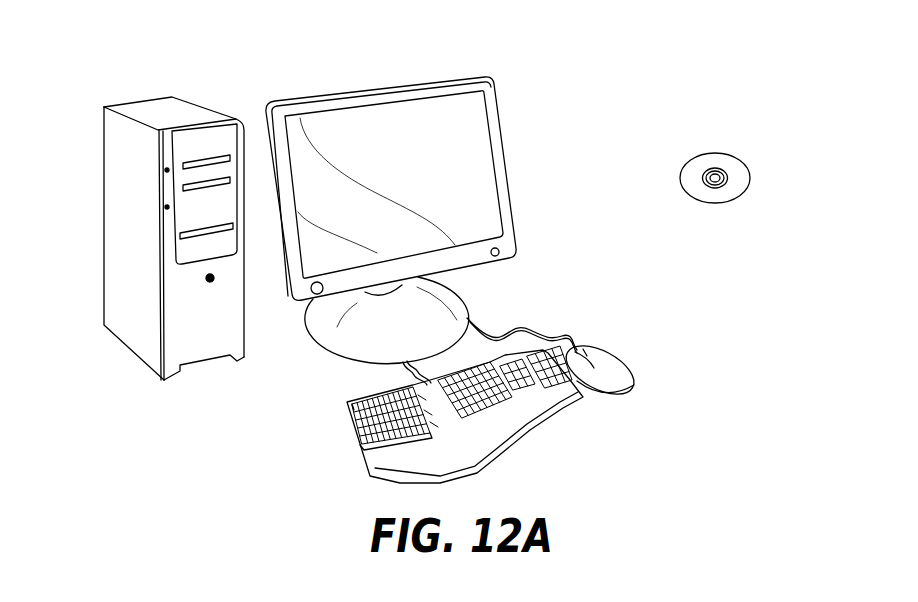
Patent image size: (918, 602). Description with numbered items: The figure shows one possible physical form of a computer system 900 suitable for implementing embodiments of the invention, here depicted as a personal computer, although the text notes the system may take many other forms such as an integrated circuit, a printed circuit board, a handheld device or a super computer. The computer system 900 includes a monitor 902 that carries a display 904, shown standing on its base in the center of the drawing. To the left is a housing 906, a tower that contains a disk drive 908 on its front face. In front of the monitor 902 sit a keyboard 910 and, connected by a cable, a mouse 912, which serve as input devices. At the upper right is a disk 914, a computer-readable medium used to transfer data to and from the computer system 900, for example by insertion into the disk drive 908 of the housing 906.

The computer system 900 is at (636, 58).
The monitor 902 is at (512, 187).
The display 904 is at (463, 120).
The housing 906 is at (158, 110).
The disk drive 908 is at (227, 235).
The keyboard 910 is at (357, 443).
The mouse 912 is at (620, 362).
The disk 914 is at (735, 153).